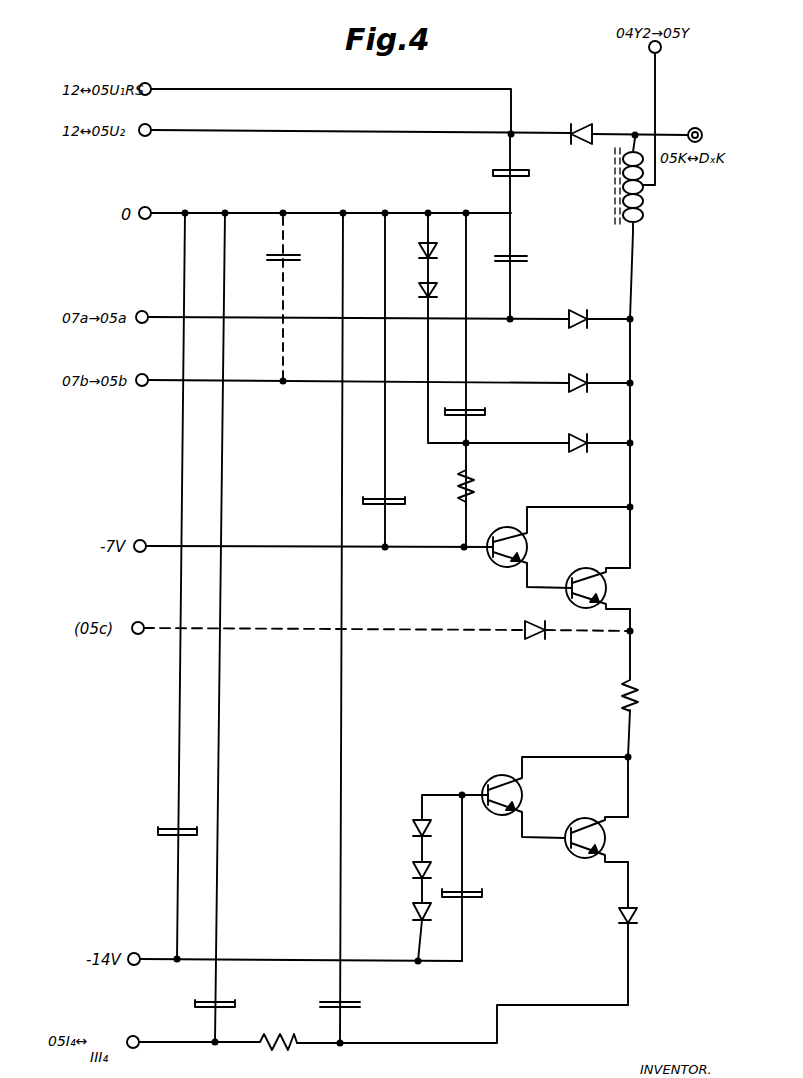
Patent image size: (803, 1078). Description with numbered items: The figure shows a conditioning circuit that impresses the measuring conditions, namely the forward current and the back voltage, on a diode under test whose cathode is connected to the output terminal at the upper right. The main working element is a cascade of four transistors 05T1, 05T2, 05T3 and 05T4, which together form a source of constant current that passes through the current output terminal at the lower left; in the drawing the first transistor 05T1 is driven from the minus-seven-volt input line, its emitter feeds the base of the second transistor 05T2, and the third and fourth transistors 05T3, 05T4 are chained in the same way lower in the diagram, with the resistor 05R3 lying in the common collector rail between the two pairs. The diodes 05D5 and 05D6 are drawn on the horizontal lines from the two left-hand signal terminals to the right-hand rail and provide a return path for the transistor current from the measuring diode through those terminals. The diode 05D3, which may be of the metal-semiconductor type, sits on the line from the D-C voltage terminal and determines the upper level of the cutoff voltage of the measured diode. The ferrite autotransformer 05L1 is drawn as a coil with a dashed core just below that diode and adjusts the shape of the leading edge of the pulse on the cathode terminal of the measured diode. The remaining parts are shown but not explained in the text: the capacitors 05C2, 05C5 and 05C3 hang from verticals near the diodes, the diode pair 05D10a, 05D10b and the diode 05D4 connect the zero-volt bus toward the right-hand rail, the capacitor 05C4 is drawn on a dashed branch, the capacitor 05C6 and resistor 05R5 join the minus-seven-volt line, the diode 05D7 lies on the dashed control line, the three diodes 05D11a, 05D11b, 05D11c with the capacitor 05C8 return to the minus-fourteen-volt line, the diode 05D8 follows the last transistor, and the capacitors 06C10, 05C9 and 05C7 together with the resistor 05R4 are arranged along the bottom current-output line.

The diode 05D3 is at (602, 112).
The ferrite autotransformer 05L1 is at (613, 185).
The capacitor 05C2 is at (493, 172).
The diode 05D10a is at (434, 257).
The diode 05D10b is at (419, 295).
The capacitor 05C4 is at (276, 262).
The capacitor 05C5 is at (518, 255).
The diode 05D6 is at (569, 324).
The diode 05D5 is at (571, 380).
The capacitor 05C3 is at (480, 413).
The diode 05D4 is at (570, 442).
The capacitor 05C6 is at (398, 487).
The resistor 05R5 is at (490, 491).
The transistor 05T1 is at (526, 559).
The transistor 05T2 is at (605, 603).
The diode 05D7 is at (525, 629).
The resistor 05R3 is at (652, 694).
The capacitor 06C10 is at (170, 830).
The transistor 05T3 is at (521, 808).
The transistor 05T4 is at (603, 854).
The diode 05D11a is at (413, 825).
The diode 05D11b is at (413, 867).
The diode 05D11c is at (413, 909).
The capacitor 05C8 is at (468, 893).
The diode 05D8 is at (636, 914).
The capacitor 05C9 is at (198, 1002).
The capacitor 05C7 is at (370, 1002).
The resistor 05R4 is at (294, 1038).